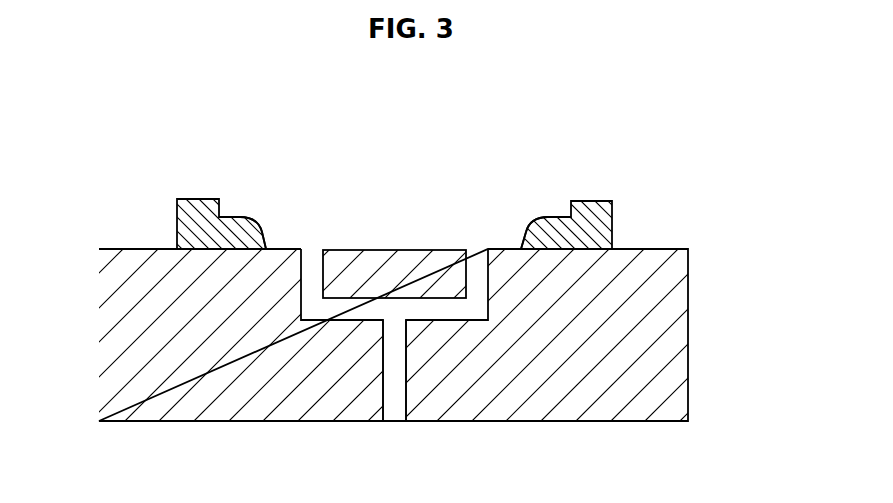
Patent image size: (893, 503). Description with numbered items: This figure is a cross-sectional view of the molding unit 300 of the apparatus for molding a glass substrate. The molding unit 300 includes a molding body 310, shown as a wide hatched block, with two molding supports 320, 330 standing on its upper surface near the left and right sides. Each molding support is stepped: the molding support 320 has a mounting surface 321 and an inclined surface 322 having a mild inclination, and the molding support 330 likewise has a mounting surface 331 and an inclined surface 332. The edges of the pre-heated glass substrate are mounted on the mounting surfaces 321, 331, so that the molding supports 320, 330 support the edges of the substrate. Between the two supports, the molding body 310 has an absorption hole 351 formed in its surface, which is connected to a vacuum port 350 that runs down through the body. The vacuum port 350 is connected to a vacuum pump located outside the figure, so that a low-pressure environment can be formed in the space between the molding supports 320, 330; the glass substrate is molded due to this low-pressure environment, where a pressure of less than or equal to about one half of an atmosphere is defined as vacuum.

The molding unit 300 is at (85, 185).
The molding body 310 is at (668, 338).
The molding support 320 is at (196, 196).
The mounting surface 321 is at (236, 216).
The inclined surface 322 is at (264, 235).
The molding support 330 is at (593, 199).
The mounting surface 331 is at (552, 216).
The inclined surface 332 is at (526, 236).
The vacuum port 350 is at (390, 353).
The absorption hole 351 is at (477, 250).